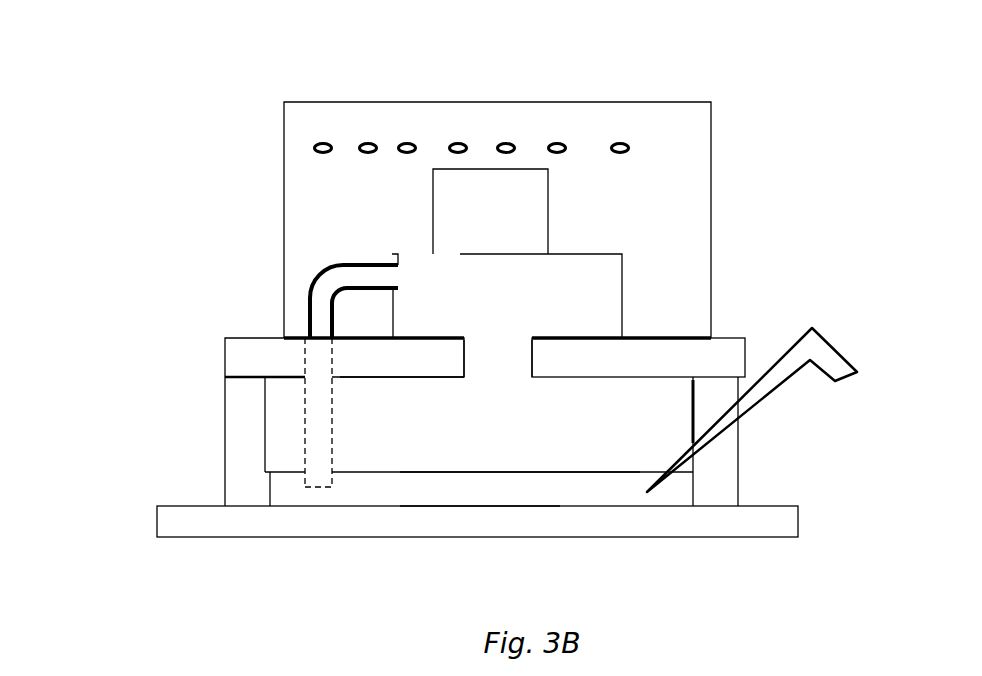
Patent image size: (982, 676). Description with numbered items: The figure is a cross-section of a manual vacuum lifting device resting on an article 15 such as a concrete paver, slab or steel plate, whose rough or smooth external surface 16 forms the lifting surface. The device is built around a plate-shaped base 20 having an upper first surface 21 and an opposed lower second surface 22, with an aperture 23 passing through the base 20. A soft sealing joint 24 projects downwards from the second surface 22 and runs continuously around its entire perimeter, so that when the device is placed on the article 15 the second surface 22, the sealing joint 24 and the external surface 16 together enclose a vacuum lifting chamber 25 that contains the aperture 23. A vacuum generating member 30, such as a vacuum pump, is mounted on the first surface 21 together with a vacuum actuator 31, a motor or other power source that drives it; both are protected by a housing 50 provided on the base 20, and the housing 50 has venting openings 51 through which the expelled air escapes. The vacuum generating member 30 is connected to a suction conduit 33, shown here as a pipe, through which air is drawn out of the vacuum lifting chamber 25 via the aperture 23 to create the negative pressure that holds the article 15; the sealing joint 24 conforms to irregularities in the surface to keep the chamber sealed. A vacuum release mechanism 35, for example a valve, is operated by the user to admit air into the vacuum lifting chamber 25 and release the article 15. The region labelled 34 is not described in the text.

The article 15 is at (577, 527).
The external surface 16 is at (497, 508).
The base 20 is at (245, 360).
The first surface 21 is at (726, 335).
The second surface 22 is at (386, 382).
The aperture 23 is at (491, 376).
The sealing joint 24 is at (247, 463).
The vacuum lifting chamber 25 is at (407, 495).
The vacuum generating member 30 is at (602, 279).
The vacuum actuator 31 is at (497, 207).
The suction conduit 33 is at (315, 417).
The cavity 34 is at (567, 432).
The vacuum release mechanism 35 is at (755, 417).
The housing 50 is at (711, 157).
The venting openings 51 is at (363, 142).